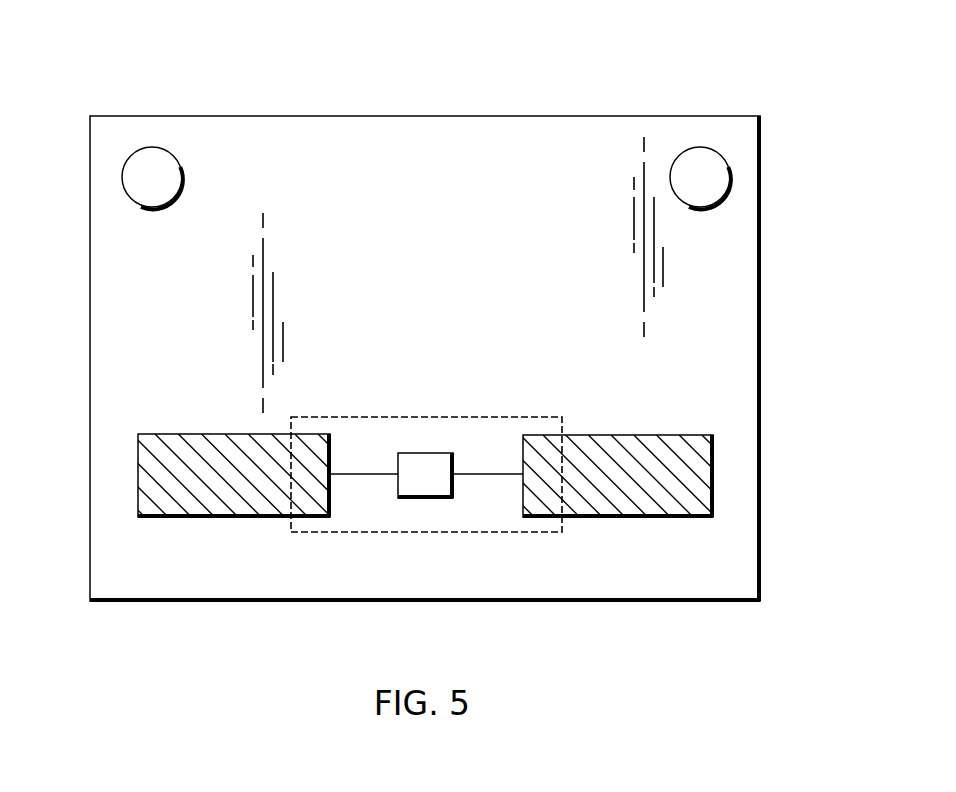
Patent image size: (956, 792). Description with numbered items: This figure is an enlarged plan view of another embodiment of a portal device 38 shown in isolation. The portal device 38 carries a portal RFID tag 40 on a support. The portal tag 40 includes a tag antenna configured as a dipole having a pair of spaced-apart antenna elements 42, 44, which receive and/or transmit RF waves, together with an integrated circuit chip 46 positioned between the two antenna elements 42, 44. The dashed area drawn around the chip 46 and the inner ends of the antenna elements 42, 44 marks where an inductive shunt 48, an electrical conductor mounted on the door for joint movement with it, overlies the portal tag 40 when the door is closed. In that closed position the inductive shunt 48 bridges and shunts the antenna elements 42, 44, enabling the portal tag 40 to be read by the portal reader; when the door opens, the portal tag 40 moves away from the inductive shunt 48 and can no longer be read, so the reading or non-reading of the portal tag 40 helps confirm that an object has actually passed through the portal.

The portal device 38 is at (776, 63).
The portal RFID tag 40 is at (412, 500).
The antenna element 42 is at (230, 518).
The antenna element 44 is at (638, 517).
The integrated circuit chip 46 is at (423, 487).
The inductive shunt 48 is at (365, 532).